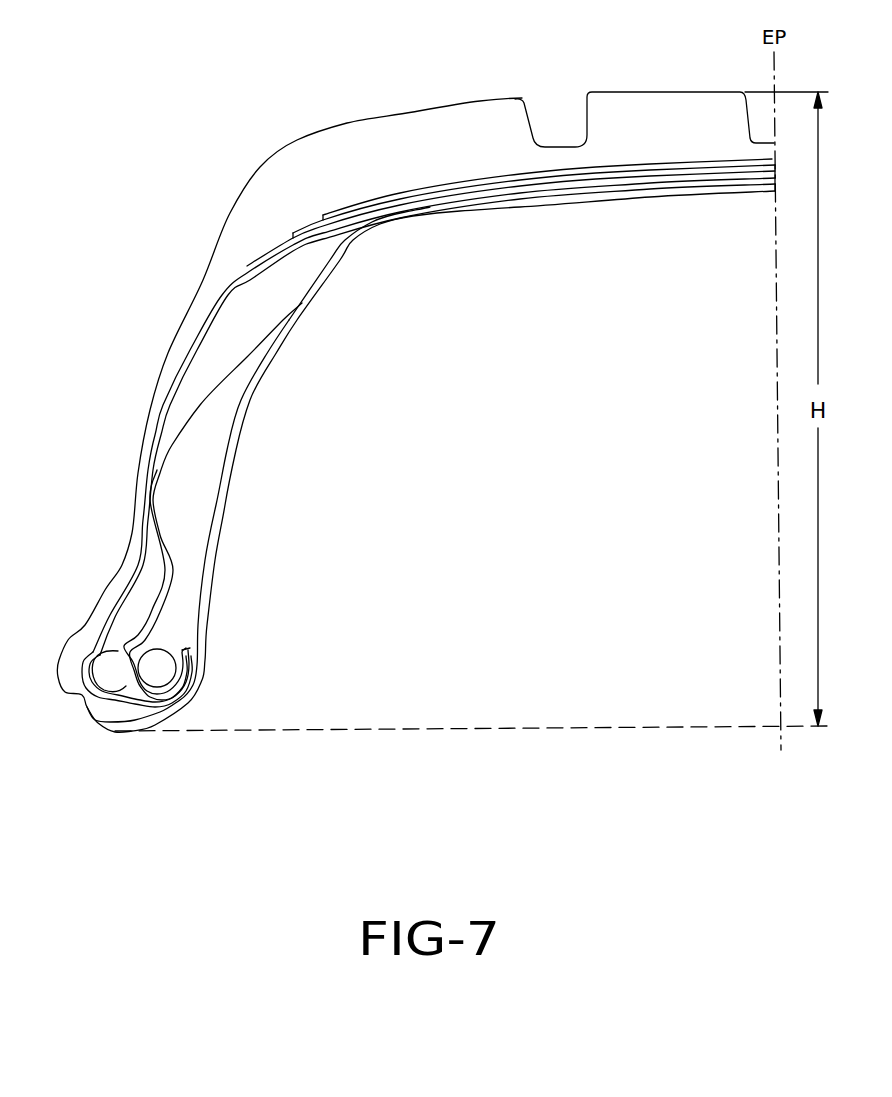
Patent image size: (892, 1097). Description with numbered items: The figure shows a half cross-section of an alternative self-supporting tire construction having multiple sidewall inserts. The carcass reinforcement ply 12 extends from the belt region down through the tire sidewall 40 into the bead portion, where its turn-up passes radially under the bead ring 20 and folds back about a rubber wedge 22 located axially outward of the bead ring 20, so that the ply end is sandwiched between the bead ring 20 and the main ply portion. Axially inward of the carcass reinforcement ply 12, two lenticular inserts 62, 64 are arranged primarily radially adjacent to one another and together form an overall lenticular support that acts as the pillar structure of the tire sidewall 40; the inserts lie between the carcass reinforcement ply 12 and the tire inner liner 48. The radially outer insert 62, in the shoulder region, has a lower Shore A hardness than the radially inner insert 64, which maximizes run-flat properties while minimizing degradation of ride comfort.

The carcass reinforcement ply 12 is at (215, 312).
The bead ring 20 is at (157, 660).
The rubber wedge 22 is at (100, 673).
The tire sidewall 40 is at (148, 410).
The tire inner liner 48 is at (325, 280).
The radially outer insert 62 is at (230, 335).
The radially inner insert 64 is at (195, 497).